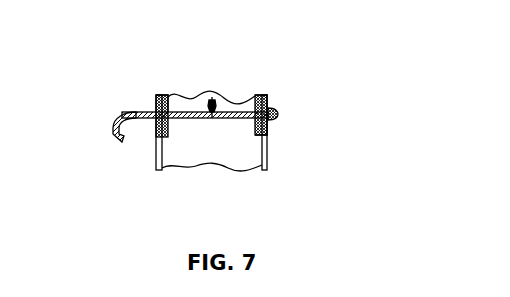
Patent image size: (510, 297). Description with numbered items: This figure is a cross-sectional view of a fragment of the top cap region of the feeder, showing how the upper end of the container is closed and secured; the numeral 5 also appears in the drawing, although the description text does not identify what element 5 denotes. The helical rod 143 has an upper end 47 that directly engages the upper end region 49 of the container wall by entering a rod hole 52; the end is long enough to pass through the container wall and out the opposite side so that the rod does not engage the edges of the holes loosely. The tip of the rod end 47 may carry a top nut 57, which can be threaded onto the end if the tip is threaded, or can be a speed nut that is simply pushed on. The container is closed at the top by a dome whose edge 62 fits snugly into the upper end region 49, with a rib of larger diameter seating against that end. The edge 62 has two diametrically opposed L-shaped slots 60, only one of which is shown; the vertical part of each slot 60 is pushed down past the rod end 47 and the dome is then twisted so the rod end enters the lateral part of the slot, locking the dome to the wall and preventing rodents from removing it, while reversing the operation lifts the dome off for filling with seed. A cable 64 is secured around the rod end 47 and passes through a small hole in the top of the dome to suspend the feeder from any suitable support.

The frame wall 5 is at (268, 125).
The upper end 47 is at (212, 119).
The upper end region 49 is at (268, 157).
The rod hole 52 is at (156, 108).
The top nut 57 is at (279, 116).
The L-shaped slot 60 is at (256, 97).
The edge 62 is at (158, 95).
The cable 64 is at (212, 97).
The helical rod 143 is at (113, 137).